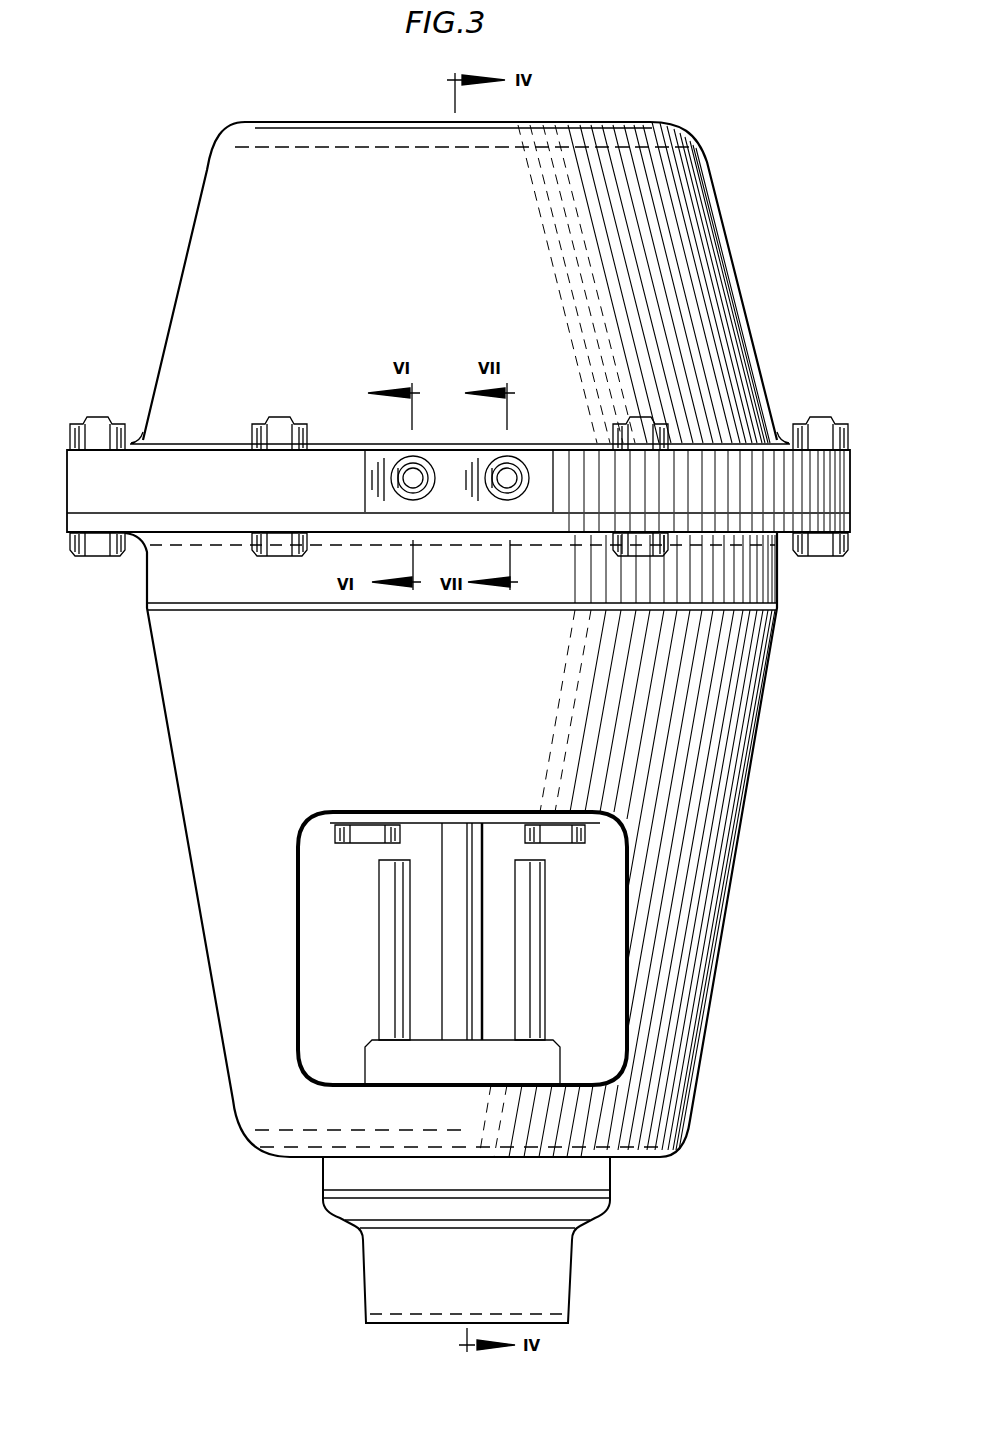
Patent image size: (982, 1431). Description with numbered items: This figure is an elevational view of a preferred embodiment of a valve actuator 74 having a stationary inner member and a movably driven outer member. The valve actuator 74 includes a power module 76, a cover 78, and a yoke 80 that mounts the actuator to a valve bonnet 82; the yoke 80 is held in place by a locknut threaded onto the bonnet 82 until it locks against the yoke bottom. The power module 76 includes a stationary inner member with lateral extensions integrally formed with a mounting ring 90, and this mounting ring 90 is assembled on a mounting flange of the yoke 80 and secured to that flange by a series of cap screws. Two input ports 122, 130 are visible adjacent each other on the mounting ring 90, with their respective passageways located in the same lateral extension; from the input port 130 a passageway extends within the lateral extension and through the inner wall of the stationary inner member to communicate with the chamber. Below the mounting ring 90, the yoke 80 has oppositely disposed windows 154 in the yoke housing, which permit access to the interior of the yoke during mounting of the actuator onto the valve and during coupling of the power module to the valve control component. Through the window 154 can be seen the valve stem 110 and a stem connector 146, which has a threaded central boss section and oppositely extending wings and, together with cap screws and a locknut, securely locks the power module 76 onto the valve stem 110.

The valve actuator 74 is at (160, 186).
The cover 78 is at (697, 205).
The yoke 80 is at (707, 810).
The valve bonnet 82 is at (592, 1178).
The mounting ring 90 is at (82, 482).
The input port 122 is at (421, 466).
The input port 130 is at (512, 470).
The windows 154 is at (427, 919).
The stem connector 146 is at (495, 812).
The power module 76 is at (569, 855).
The valve stem 110 is at (452, 858).